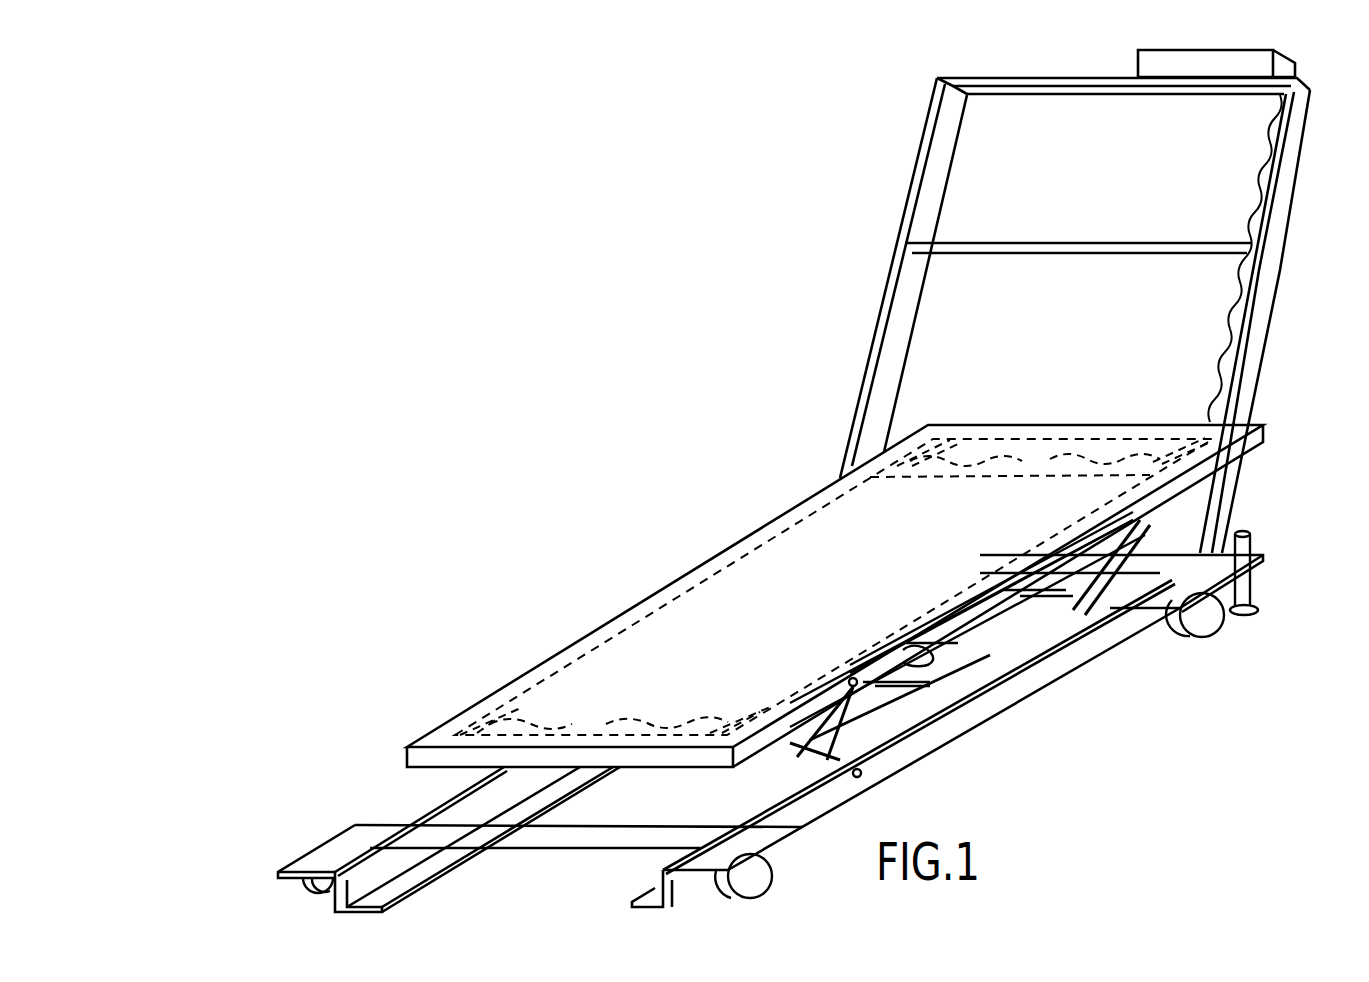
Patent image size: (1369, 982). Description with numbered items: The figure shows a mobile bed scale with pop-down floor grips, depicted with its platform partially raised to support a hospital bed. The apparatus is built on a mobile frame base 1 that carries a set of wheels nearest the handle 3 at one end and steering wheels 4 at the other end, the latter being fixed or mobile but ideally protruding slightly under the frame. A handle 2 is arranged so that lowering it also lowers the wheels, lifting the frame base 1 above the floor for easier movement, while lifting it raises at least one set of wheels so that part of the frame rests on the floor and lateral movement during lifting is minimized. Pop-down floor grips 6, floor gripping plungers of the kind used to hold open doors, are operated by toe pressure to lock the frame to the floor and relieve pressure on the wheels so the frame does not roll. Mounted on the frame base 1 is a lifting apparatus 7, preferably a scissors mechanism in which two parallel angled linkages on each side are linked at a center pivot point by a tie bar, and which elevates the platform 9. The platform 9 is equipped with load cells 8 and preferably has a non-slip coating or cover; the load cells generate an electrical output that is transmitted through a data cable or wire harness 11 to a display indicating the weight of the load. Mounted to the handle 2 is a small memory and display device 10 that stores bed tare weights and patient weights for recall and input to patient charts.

The mobile frame base 1 is at (973, 740).
The handle 2 is at (942, 207).
The wheels nearest the handle 3 is at (1174, 646).
The steering wheels 4 is at (293, 898).
The pop-down floor grips 6 is at (1251, 543).
The lifting apparatus 7 is at (787, 755).
The load cells 8 is at (836, 590).
The platform 9 is at (831, 609).
The memory and display device 10 is at (1122, 62).
The data cable or wire harness 11 is at (1245, 167).